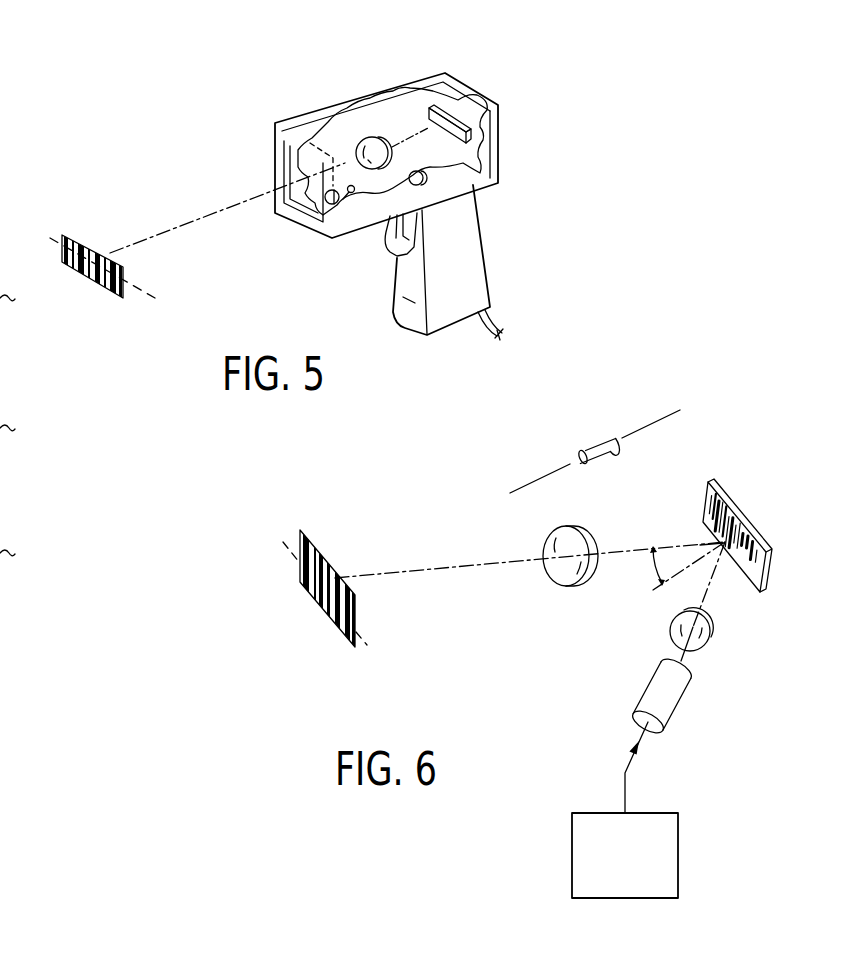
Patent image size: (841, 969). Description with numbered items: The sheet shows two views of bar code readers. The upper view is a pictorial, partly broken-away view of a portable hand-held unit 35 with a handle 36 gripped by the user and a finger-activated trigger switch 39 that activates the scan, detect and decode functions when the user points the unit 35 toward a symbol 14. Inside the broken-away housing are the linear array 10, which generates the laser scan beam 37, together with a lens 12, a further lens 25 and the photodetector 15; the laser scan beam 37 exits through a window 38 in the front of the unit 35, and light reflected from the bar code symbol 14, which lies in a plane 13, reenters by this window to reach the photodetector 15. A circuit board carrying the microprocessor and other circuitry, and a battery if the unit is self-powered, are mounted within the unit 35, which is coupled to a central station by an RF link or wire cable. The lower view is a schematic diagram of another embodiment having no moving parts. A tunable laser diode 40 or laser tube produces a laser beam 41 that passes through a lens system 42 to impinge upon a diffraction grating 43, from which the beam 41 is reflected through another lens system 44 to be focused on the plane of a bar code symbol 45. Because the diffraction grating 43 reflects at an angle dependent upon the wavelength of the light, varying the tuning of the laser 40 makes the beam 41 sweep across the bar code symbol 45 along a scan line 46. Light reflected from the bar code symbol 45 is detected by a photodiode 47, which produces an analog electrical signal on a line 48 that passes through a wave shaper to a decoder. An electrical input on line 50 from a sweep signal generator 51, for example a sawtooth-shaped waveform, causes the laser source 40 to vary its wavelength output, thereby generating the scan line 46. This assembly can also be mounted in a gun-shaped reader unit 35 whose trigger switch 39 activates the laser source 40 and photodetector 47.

In FIG. 5, the linear array 10 is at (458, 104).
In FIG. 5, the lens 12 is at (378, 137).
In FIG. 5, the target plane 13 is at (33, 233).
In FIG. 5, the bar code symbol 14 is at (97, 250).
In FIG. 5, the photodetector 15 is at (352, 196).
In FIG. 5, the lens 25 is at (423, 169).
In FIG. 5, the portable hand-held unit 35 is at (345, 99).
In FIG. 5, the handle 36 is at (486, 260).
In FIG. 5, the laser scan beam 37 is at (197, 222).
In FIG. 5, the window 38 is at (300, 152).
In FIG. 5, the trigger switch 39 is at (387, 250).
In FIG. 6, the tunable laser diode 40 is at (667, 700).
In FIG. 6, the laser beam 41 is at (493, 562).
In FIG. 6, the lens system 42 is at (714, 633).
In FIG. 6, the diffraction grating 43 is at (750, 548).
In FIG. 6, the lens system 44 is at (590, 532).
In FIG. 6, the bar code symbol 45 is at (330, 563).
In FIG. 6, the scan line 46 is at (369, 646).
In FIG. 6, the photodiode 47 is at (594, 443).
In FIG. 6, the line 48 is at (657, 422).
In FIG. 6, the line 50 is at (624, 788).
In FIG. 6, the sweep signal generator 51 is at (680, 857).